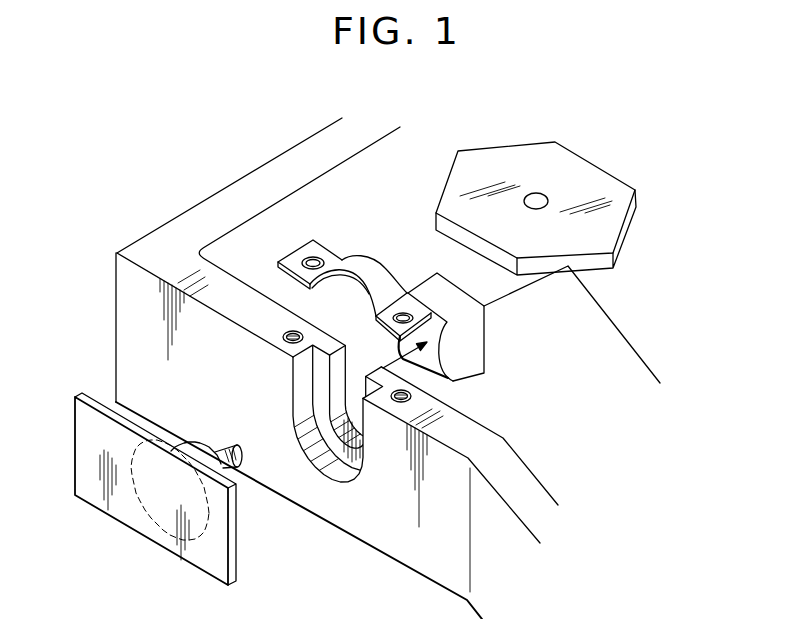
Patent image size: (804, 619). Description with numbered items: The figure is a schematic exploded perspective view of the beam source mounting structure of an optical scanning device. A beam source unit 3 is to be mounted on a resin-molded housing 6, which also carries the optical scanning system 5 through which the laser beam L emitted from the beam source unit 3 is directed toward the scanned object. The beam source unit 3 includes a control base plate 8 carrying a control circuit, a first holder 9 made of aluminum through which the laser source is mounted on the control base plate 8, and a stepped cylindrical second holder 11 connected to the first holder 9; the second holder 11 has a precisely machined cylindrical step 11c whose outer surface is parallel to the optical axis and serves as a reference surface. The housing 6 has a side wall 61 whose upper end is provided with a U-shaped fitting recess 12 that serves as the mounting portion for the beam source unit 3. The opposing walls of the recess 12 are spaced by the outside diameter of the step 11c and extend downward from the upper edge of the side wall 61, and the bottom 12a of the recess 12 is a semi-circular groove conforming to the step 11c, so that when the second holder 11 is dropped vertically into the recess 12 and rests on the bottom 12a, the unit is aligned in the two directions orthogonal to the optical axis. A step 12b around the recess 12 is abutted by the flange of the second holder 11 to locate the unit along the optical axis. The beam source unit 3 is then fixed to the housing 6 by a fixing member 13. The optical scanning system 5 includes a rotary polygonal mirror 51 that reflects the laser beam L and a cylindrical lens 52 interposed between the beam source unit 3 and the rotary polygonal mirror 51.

The beam source unit 3 is at (68, 417).
The optical scanning system 5 is at (580, 153).
The housing 6 is at (216, 194).
The control base plate 8 is at (118, 512).
The first holder 9 is at (183, 446).
The second holder 11 is at (228, 444).
The step 11c is at (203, 450).
The U-shaped fitting recess 12 is at (356, 363).
The bottom of the U-shaped recess 12a is at (308, 450).
The step 12b is at (338, 482).
The fixing member 13 is at (322, 247).
The rotary polygonal mirror 51 is at (509, 158).
The cylindrical lens 52 is at (477, 368).
The side wall 61 is at (118, 323).
The laser beam L is at (620, 332).